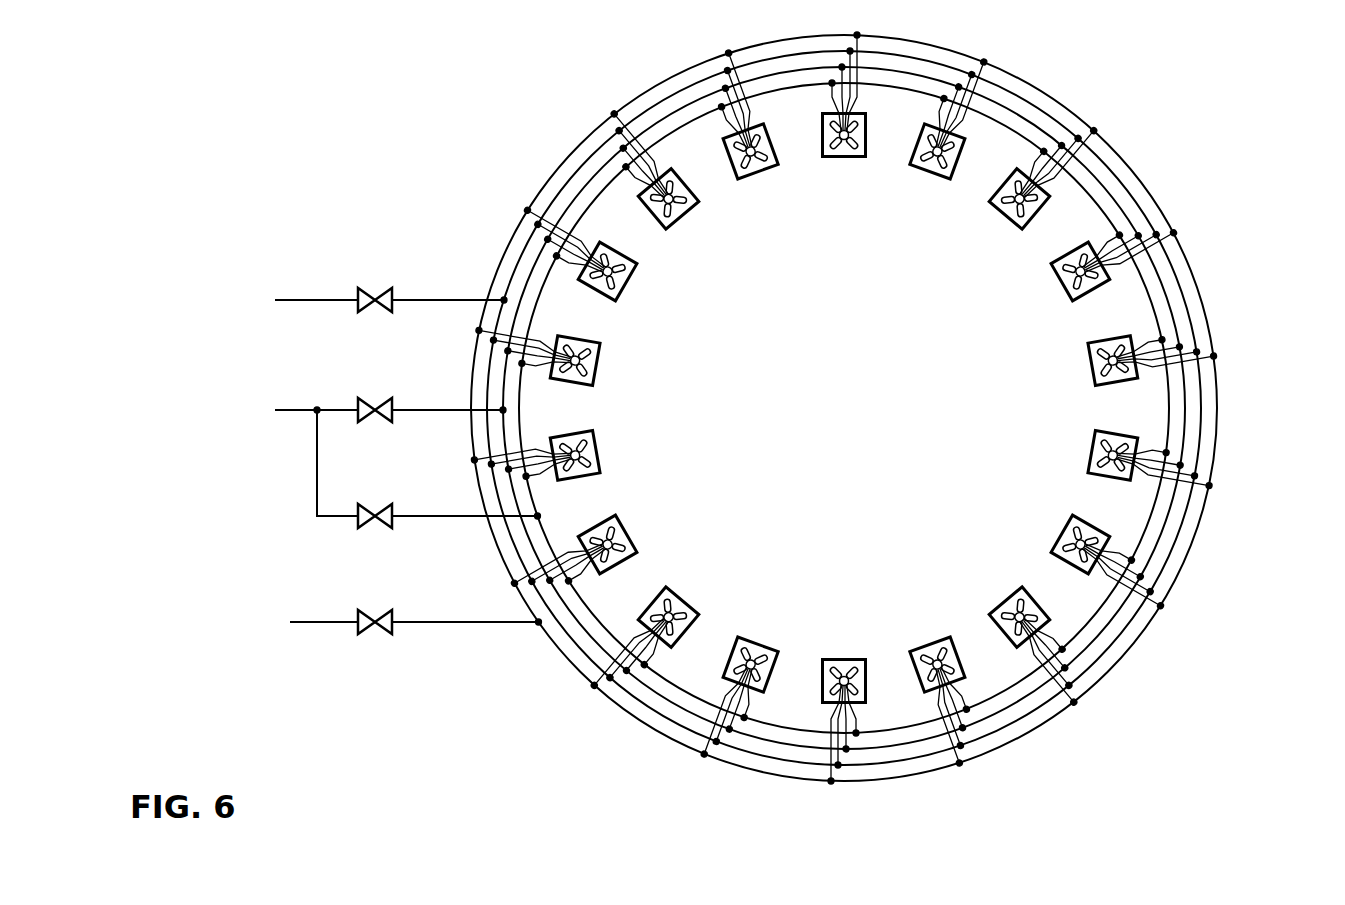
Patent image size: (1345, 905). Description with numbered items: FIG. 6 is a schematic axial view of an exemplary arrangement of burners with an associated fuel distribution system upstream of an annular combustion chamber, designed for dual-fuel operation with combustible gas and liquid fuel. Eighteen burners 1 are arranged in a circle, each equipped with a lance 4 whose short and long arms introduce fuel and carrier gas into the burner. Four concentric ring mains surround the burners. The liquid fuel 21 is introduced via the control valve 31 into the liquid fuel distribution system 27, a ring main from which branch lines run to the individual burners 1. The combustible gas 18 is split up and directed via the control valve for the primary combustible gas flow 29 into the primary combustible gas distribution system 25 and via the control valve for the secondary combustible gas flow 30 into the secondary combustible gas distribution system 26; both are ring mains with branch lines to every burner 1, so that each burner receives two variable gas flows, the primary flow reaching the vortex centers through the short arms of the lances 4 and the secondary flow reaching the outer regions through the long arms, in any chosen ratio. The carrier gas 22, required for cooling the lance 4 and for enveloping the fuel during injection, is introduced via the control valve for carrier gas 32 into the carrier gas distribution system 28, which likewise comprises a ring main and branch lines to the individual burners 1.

The burner 1 is at (598, 468).
The lance 4 is at (588, 363).
The combustible gas 18 is at (384, 458).
The liquid fuel 21 is at (367, 301).
The carrier gas 22 is at (385, 623).
The primary combustible gas distribution system 25 is at (1150, 298).
The secondary combustible gas distribution system 26 is at (1185, 410).
The liquid fuel distribution system 27 is at (1179, 532).
The carrier gas distribution system 28 is at (1128, 650).
The control valve for the primary combustible gas flow 29 is at (310, 383).
The control valve for the secondary combustible gas flow 30 is at (310, 533).
The control valve 31 is at (310, 275).
The control valve for carrier gas 32 is at (310, 648).